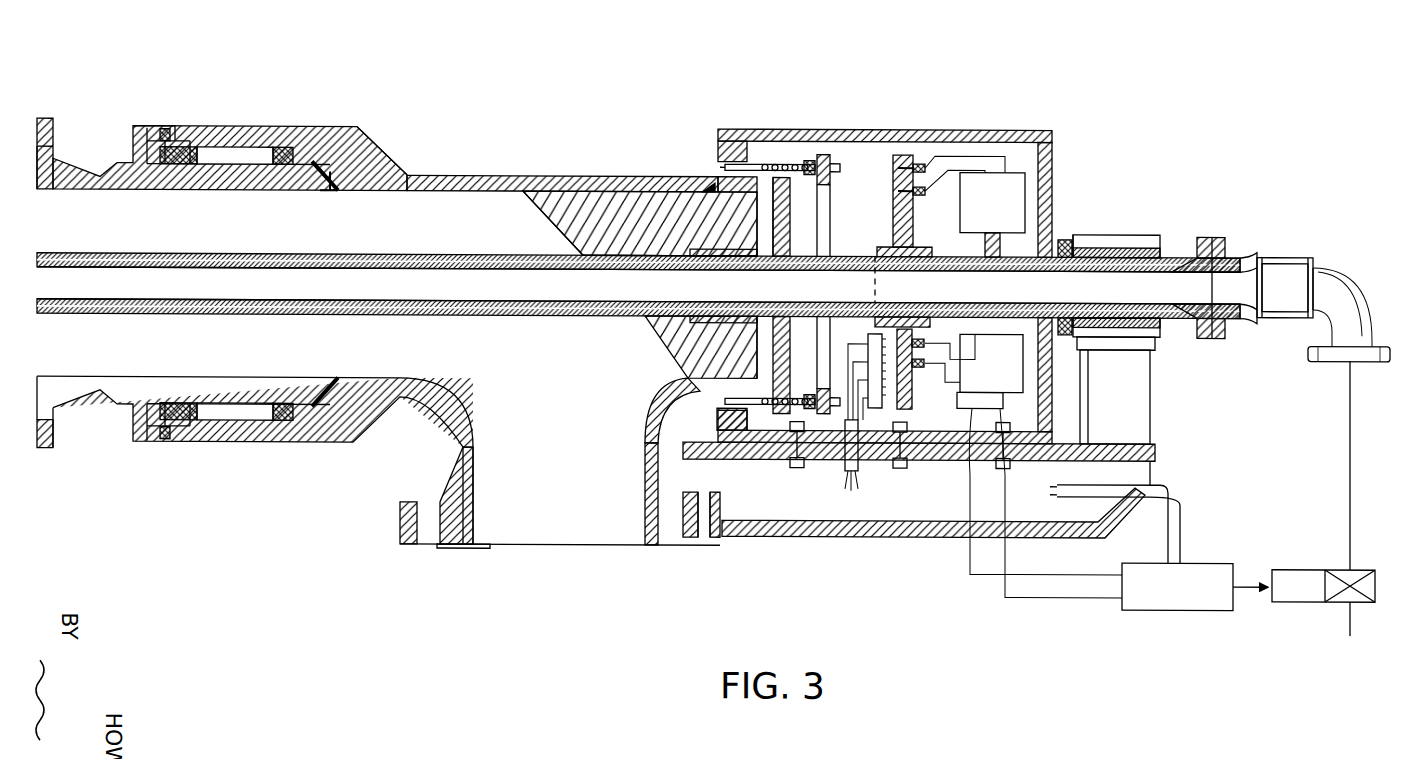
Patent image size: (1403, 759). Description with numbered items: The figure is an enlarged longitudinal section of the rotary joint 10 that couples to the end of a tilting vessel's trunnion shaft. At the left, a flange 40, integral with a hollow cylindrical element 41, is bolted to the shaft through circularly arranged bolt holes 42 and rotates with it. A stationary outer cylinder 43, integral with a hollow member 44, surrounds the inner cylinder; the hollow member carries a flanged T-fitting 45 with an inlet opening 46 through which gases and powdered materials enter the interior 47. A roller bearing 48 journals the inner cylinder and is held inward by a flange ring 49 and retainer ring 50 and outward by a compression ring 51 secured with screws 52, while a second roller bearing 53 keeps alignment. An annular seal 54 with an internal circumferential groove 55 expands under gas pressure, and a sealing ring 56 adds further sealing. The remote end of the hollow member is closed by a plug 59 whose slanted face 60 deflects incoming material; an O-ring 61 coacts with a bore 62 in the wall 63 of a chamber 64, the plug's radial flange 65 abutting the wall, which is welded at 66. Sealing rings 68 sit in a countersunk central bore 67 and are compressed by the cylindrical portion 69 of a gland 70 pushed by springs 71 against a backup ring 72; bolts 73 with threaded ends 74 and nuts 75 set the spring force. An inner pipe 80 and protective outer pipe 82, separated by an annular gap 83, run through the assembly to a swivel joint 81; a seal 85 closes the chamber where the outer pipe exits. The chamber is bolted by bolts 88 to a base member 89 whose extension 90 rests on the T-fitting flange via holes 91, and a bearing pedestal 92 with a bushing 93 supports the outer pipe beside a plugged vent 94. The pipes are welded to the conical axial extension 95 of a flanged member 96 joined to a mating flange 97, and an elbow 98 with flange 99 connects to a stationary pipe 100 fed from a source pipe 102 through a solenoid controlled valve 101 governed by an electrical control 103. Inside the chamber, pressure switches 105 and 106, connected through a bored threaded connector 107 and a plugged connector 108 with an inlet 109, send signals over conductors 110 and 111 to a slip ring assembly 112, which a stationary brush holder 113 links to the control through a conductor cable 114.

The rotary joint 10 is at (555, 154).
The flange 40 is at (110, 158).
The hollow cylindrical element 41 is at (117, 160).
The bolt holes 42 is at (58, 150).
The outer cylinder 43 is at (250, 126).
The hollow member 44 is at (452, 173).
The flanged T-fitting 45 is at (437, 483).
The inlet opening 46 is at (555, 535).
The interior 47 is at (512, 373).
The roller bearing 48 is at (172, 148).
The flange ring 49 is at (190, 155).
The retainer ring 50 is at (205, 163).
The compression ring 51 is at (150, 140).
The screws 52 is at (135, 126).
The roller bearing 53 is at (290, 150).
The annular seal 54 is at (375, 175).
The internal circumferential groove 55 is at (330, 190).
The sealing ring 56 is at (320, 168).
The plug 59 is at (588, 190).
The slanted face 60 is at (545, 218).
The O-ring 61 is at (640, 185).
The bore 62 is at (705, 185).
The wall 63 is at (740, 158).
The chamber 64 is at (935, 125).
The radial flange 65 is at (790, 161).
The weld 66 is at (718, 180).
The countersunk central bore 67 is at (625, 188).
The sealing rings 68 is at (740, 258).
The cylindrical portion 69 is at (800, 238).
The gland 70 is at (818, 210).
The springs 71 is at (812, 158).
The backup ring 72 is at (832, 176).
The bolts 73 is at (895, 152).
The bolt ends 74 is at (762, 164).
The nuts 75 is at (836, 160).
The inner pipe 80 is at (858, 274).
The swivel joint 81 is at (1300, 255).
The outer pipe 82 is at (455, 252).
The annular gap 83 is at (405, 252).
The seal 85 is at (1065, 236).
The bolts 88 is at (903, 466).
The base member 89 is at (890, 535).
The extension 90 is at (706, 458).
The holes 91 is at (702, 535).
The bearing pedestal 92 is at (1150, 395).
The bushing 93 is at (1145, 240).
The vent 94 is at (1075, 235).
The conical axial extension 95 is at (1180, 262).
The flanged member 96 is at (1215, 235).
The mating flange 97 is at (1248, 255).
The elbow 98 is at (1356, 290).
The flange 99 is at (1315, 355).
The stationary pipe 100 is at (1350, 473).
The solenoid controlled valve 101 is at (1358, 564).
The source pipe 102 is at (1348, 622).
The electrical control 103 is at (1215, 558).
The pressure switch 105 is at (1007, 211).
The pressure switch 106 is at (1007, 371).
The bored threaded connector 107 is at (985, 242).
The plugged connector 108 is at (913, 337).
The inlet 109 is at (968, 405).
The electric conductor 110 is at (975, 160).
The electric conductor 111 is at (1000, 408).
The slip ring assembly 112 is at (932, 193).
The brush holder 113 is at (870, 470).
The conductor cable 114 is at (848, 466).